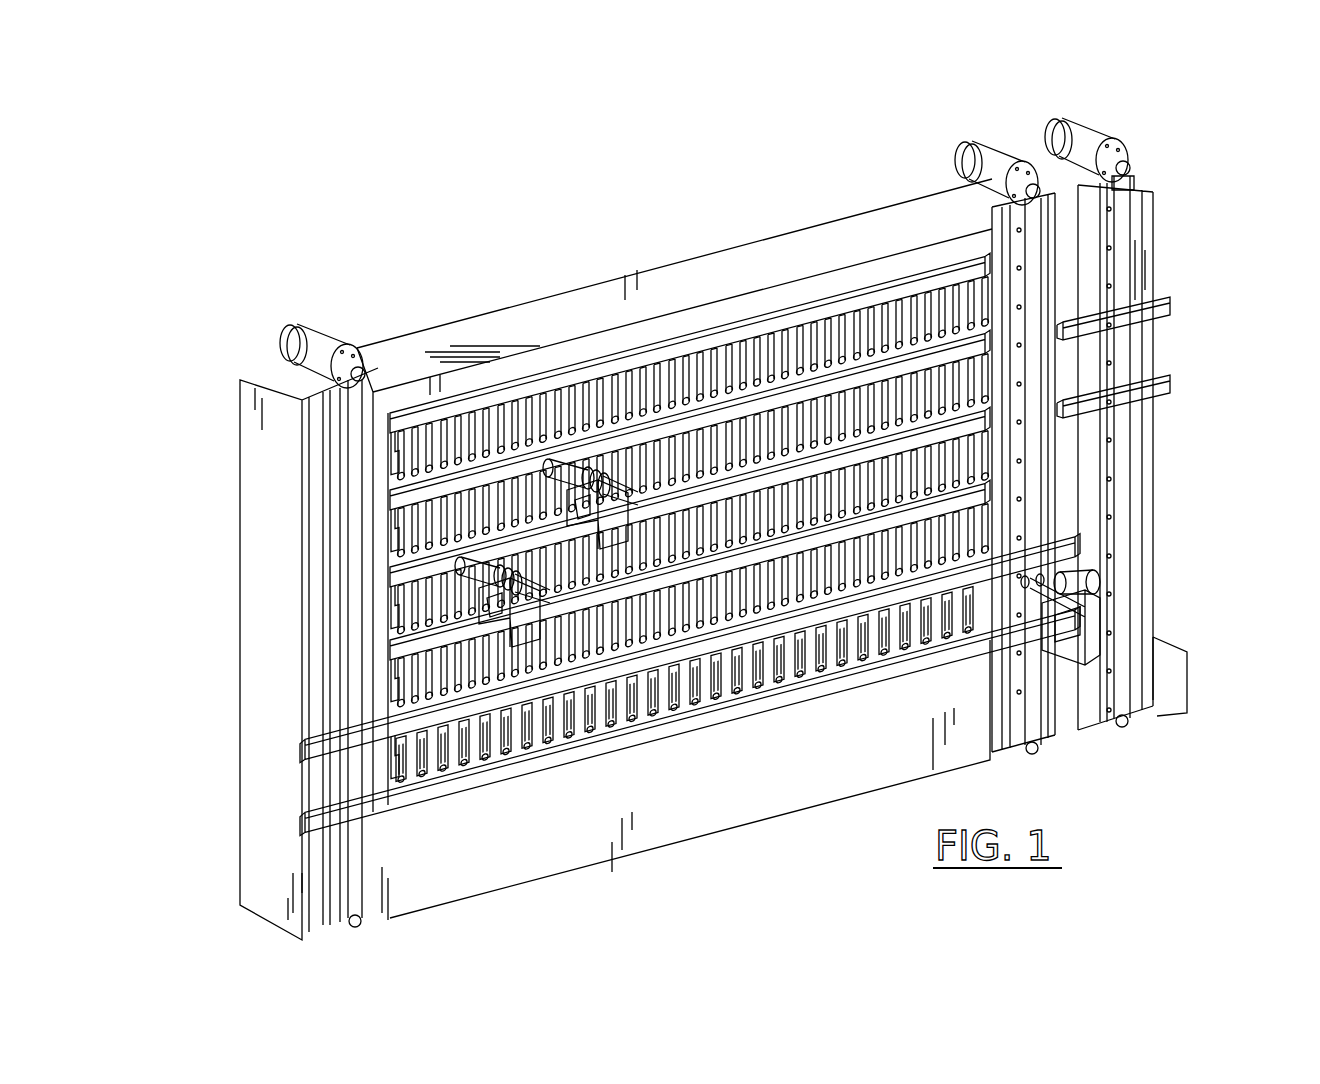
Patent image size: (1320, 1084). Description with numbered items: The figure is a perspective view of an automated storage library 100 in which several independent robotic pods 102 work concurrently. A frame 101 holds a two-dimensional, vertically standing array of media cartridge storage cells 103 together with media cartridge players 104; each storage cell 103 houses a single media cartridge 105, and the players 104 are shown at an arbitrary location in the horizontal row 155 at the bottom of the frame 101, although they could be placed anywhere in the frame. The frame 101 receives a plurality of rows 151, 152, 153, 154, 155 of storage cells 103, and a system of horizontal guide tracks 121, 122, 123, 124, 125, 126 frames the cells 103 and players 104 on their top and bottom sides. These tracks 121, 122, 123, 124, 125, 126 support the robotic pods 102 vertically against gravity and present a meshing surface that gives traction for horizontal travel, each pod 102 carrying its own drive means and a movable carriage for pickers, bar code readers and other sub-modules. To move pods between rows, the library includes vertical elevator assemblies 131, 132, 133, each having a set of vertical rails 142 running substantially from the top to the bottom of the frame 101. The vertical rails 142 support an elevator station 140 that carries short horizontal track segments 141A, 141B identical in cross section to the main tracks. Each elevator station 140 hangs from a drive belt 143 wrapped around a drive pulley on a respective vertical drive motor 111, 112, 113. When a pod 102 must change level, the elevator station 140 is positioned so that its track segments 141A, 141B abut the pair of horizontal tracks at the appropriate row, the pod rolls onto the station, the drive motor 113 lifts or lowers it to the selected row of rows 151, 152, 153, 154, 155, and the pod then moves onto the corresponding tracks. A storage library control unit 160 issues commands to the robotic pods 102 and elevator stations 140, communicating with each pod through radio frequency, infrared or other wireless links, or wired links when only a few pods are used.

The automated storage library 100 is at (462, 236).
The frame 101 is at (576, 298).
The robotic pod 102 is at (630, 468).
The media cartridge storage cell 103 is at (636, 490).
The media cartridge player 104 is at (737, 707).
The media cartridge 105 is at (842, 338).
The vertical drive motor 111 is at (320, 330).
The vertical drive motor 112 is at (988, 183).
The vertical drive motor 113 is at (1097, 135).
The horizontal guide track 121 is at (391, 424).
The horizontal guide track 122 is at (391, 502).
The horizontal guide track 123 is at (391, 578).
The horizontal guide track 124 is at (391, 655).
The horizontal guide track 125 is at (303, 745).
The horizontal guide track 126 is at (303, 826).
The vertical elevator assembly 131 is at (394, 929).
The vertical elevator assembly 132 is at (1033, 761).
The vertical elevator assembly 133 is at (1108, 743).
The elevator station 140 is at (1262, 233).
The elevator track segment 141A is at (1168, 312).
The elevator track segment 141B is at (1172, 392).
The vertical rail 142 is at (1140, 466).
The drive belt 143 is at (1130, 178).
The row of media cartridge storage cells 151 is at (386, 459).
The row of media cartridge storage cells 152 is at (386, 540).
The row of media cartridge storage cells 153 is at (386, 617).
The row of media cartridge storage cells 154 is at (386, 690).
The horizontal row 155 is at (386, 766).
The storage library control unit 160 is at (1182, 676).